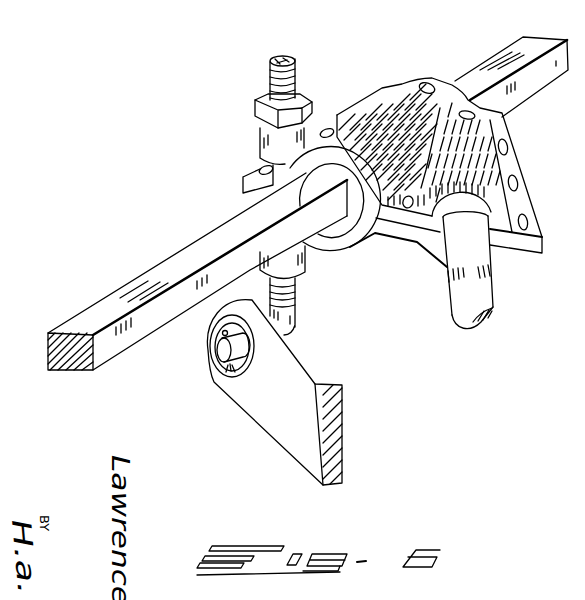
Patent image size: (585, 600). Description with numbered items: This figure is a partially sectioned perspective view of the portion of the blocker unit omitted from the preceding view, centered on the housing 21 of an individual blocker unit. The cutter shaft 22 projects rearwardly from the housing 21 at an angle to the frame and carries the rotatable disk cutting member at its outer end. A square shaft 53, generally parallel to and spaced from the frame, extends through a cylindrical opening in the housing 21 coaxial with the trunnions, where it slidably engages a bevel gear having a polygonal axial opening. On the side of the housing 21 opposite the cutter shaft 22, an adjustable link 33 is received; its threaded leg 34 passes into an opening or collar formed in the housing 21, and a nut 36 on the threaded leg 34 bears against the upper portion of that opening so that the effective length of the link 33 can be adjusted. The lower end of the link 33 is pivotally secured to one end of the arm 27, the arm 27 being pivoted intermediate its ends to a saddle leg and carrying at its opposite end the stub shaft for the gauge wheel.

The housing 21 is at (468, 166).
The cutter shaft 22 is at (497, 299).
The arm 27 is at (318, 358).
The adjustable link 33 is at (297, 310).
The threaded leg 34 is at (283, 57).
The nut 36 is at (304, 100).
The shaft 53 is at (173, 255).